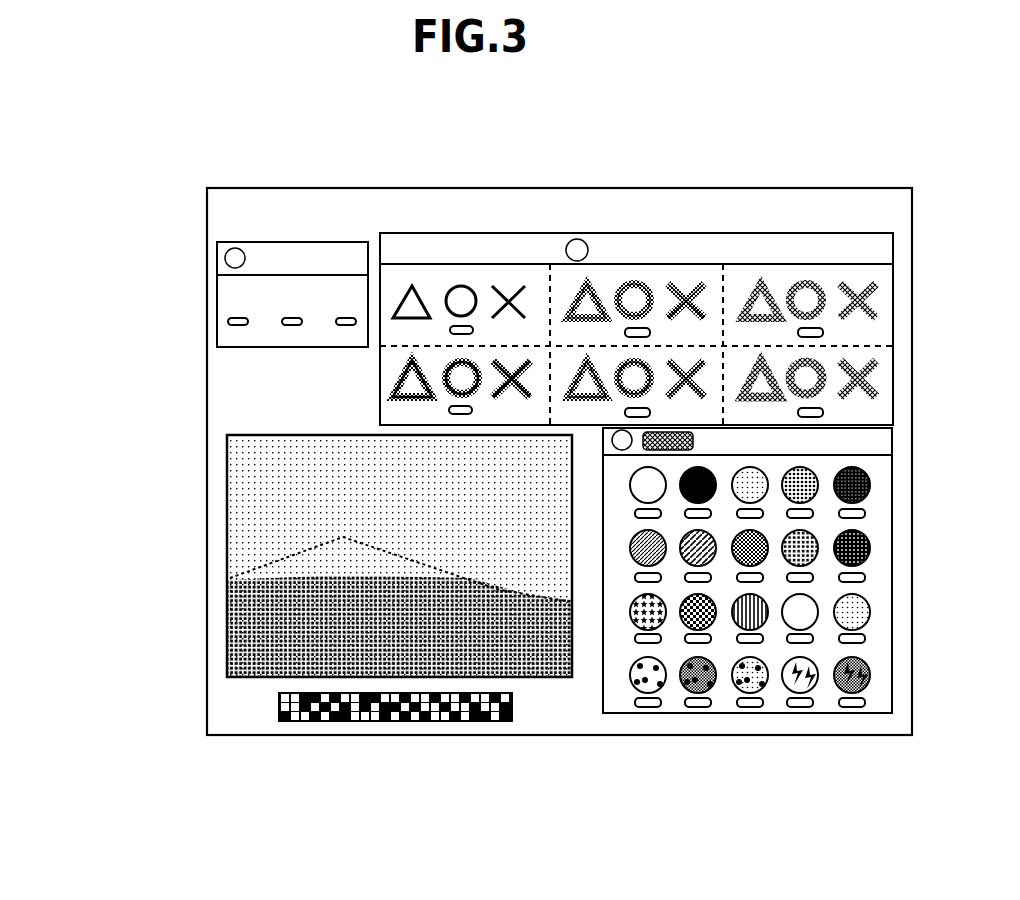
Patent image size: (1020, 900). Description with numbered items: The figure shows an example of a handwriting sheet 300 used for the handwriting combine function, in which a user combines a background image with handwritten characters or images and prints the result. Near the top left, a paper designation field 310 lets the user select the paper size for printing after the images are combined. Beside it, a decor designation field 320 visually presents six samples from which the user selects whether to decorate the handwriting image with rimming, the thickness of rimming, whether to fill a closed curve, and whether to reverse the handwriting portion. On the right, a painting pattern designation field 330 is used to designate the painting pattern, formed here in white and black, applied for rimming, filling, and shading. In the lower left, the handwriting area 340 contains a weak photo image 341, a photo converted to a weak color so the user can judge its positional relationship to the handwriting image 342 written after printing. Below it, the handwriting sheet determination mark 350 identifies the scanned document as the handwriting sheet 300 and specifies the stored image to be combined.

The handwriting sheet 300 is at (552, 137).
The paper designation field 310 is at (217, 262).
The decor designation field 320 is at (682, 233).
The painting pattern designation field 330 is at (738, 713).
The handwriting area 340 is at (294, 634).
The weak photo image 341 is at (248, 658).
The handwriting image 342 is at (323, 492).
The handwriting sheet determination mark 350 is at (460, 722).